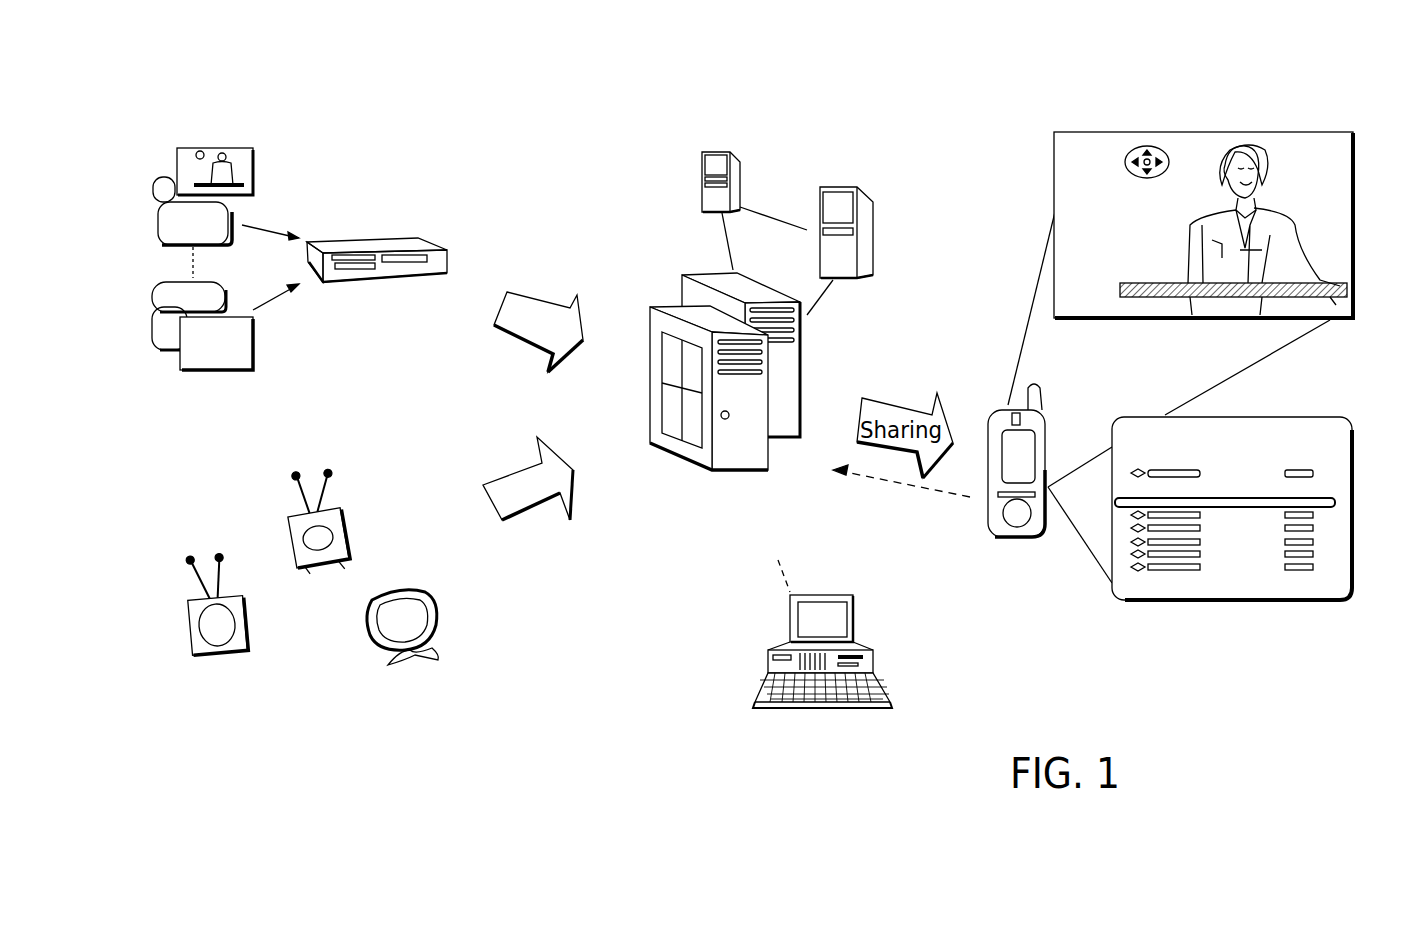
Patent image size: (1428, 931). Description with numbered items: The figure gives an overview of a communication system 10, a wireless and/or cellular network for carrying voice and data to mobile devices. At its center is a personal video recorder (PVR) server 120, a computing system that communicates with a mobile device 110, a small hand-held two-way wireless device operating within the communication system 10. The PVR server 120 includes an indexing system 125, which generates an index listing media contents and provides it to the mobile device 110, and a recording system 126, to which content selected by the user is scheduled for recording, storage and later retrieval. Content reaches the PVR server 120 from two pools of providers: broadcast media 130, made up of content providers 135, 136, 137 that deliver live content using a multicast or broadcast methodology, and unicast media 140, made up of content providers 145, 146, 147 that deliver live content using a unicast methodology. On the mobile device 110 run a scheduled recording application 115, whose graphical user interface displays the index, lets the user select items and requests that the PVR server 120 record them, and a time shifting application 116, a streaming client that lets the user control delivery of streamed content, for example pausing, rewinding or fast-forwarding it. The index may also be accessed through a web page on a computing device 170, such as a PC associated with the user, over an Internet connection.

The communication system 10 is at (910, 117).
The mobile device 110 is at (988, 510).
The scheduled recording application 115 is at (1353, 485).
The time shifting application 116 is at (1353, 210).
The personal video recorder (PVR) server 120 is at (663, 302).
The indexing system 125 is at (737, 162).
The recording system 126 is at (875, 210).
The broadcast media 130 is at (520, 500).
The content provider 135 is at (438, 610).
The content provider 136 is at (348, 533).
The content provider 137 is at (190, 625).
The unicast media 140 is at (415, 254).
The content provider 145 is at (447, 265).
The content provider 146 is at (167, 190).
The content provider 147 is at (165, 302).
The computing device 170 is at (829, 687).